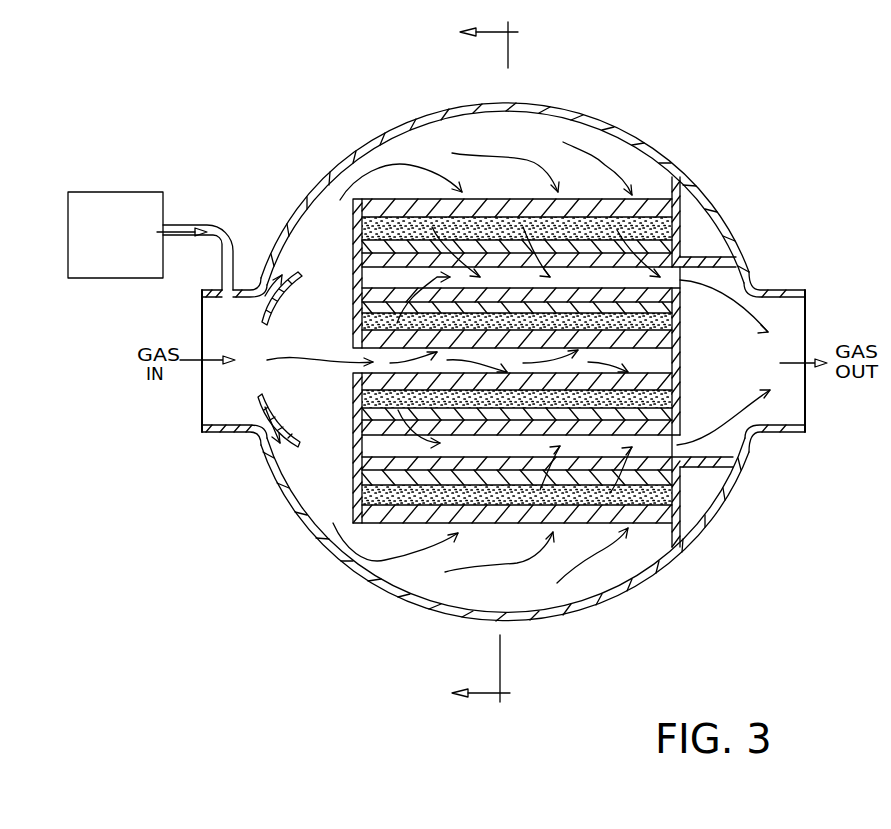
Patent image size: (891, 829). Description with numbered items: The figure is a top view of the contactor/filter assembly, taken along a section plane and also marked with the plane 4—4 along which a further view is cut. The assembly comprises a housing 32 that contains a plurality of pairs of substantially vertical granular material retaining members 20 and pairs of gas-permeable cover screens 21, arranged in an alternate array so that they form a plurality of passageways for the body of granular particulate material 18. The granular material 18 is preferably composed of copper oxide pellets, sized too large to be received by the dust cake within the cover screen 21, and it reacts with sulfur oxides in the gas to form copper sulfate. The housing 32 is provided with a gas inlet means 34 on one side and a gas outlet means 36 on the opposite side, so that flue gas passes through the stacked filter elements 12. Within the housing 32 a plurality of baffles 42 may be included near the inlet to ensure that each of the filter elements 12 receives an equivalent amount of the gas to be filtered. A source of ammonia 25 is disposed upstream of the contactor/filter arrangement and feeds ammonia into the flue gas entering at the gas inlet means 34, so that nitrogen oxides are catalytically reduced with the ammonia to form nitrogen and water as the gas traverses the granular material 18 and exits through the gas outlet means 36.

The plane 4-4 section indicator 4 is at (494, 364).
The filter element 12 is at (387, 262).
The granular particulate material 18 is at (492, 226).
The granular material retaining member 20 is at (418, 208).
The gas-permeable cover screen 21 is at (573, 247).
The source of ammonia 25 is at (123, 273).
The housing 32 is at (590, 113).
The gas inlet means 34 is at (221, 436).
The gas outlet means 36 is at (783, 436).
The baffle 42 is at (283, 306).